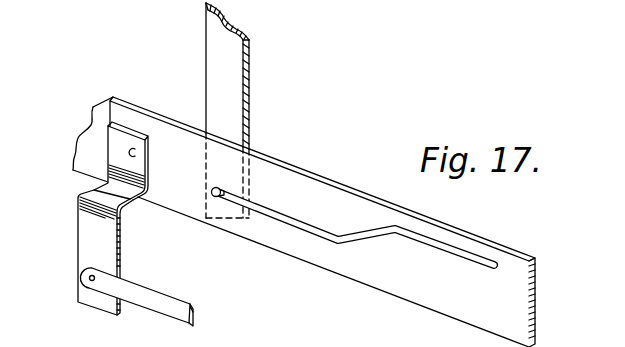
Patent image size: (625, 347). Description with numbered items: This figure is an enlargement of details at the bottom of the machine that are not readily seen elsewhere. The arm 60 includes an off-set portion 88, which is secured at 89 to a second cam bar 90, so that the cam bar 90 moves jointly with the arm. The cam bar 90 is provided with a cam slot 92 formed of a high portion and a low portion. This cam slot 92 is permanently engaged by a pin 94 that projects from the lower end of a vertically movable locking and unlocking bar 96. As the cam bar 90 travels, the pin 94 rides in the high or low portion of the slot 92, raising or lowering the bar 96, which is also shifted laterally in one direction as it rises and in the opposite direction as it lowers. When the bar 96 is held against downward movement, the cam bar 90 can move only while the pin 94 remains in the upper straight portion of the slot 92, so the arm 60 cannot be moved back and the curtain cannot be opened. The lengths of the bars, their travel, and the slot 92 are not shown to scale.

The arm 60 is at (82, 219).
The off-set portion 88 is at (114, 144).
The securing point 89 is at (134, 152).
The second cam bar 90 is at (288, 182).
The cam slot 92 is at (488, 257).
The pin 94 is at (215, 196).
The locking and unlocking bar 96 is at (234, 86).